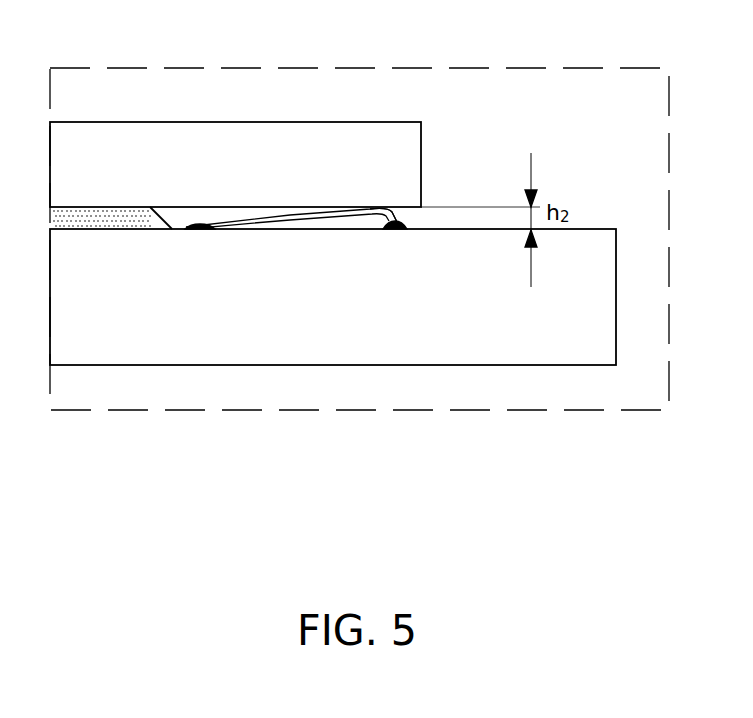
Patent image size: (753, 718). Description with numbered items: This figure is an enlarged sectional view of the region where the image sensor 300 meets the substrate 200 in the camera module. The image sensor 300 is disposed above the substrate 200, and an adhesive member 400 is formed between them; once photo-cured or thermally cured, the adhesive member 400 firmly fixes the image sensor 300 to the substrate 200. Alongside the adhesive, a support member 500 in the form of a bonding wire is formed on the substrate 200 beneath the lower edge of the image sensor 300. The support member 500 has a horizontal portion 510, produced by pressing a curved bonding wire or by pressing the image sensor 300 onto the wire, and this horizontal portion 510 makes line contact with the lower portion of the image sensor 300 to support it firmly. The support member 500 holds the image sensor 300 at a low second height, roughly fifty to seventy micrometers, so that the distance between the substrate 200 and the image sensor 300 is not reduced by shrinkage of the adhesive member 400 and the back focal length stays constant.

The substrate 200 is at (525, 347).
The image sensor 300 is at (401, 138).
The adhesive member 400 is at (90, 215).
The support member 500 is at (263, 222).
The horizontal portion 510 is at (387, 211).